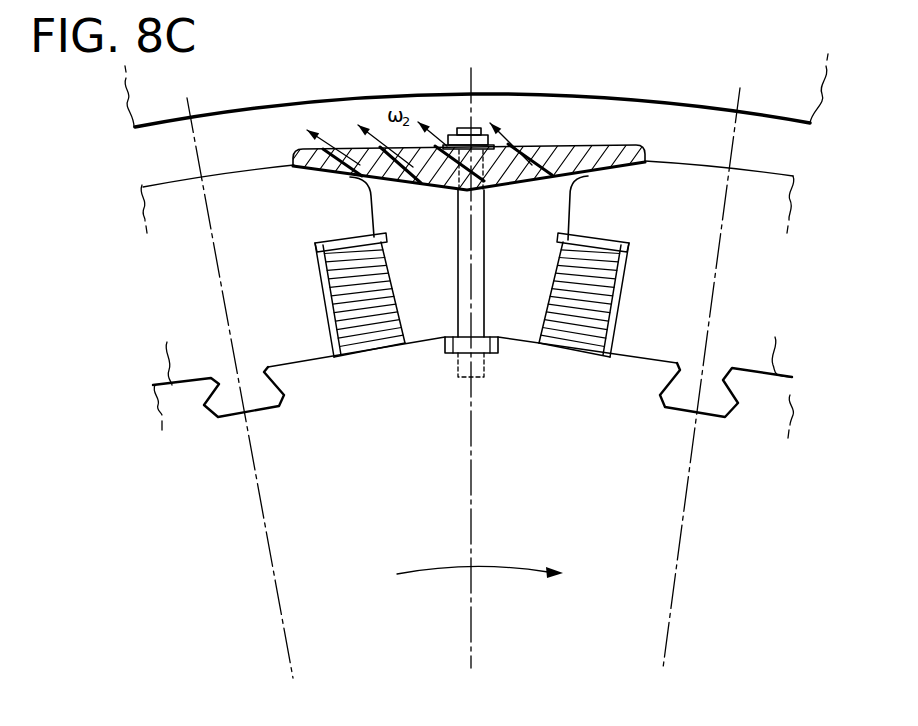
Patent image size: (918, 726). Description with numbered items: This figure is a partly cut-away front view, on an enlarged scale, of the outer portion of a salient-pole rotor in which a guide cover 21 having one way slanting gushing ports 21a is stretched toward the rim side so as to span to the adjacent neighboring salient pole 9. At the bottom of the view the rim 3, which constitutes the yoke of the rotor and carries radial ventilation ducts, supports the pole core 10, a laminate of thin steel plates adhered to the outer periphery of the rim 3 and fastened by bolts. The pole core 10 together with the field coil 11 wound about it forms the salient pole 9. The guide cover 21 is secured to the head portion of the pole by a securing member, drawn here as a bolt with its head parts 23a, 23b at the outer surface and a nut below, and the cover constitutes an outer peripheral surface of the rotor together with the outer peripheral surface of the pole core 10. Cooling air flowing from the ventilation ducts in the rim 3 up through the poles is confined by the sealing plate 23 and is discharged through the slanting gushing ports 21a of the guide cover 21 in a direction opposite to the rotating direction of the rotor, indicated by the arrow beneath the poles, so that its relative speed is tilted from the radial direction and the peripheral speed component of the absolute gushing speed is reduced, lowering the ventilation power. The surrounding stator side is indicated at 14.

The rim 3 is at (793, 393).
The salient pole 9 is at (772, 172).
The pole core 10 is at (678, 158).
The field coil 11 is at (555, 290).
The stator ring 14 is at (826, 88).
The guide cover 21 is at (609, 126).
The gushing ports 21a is at (537, 165).
The sealing plate 23 is at (538, 256).
The bolt head 23a is at (460, 128).
The washer 23b is at (486, 135).